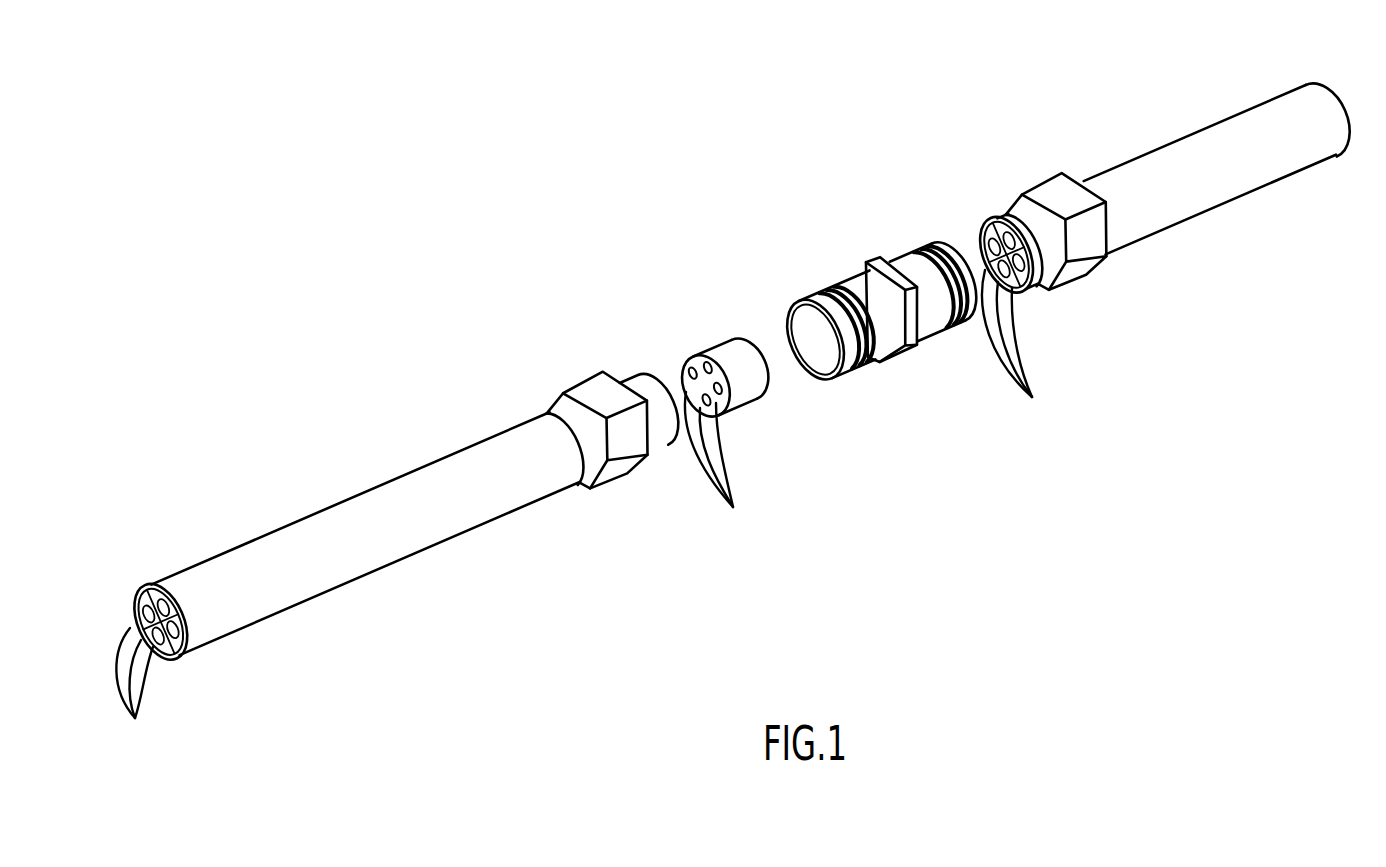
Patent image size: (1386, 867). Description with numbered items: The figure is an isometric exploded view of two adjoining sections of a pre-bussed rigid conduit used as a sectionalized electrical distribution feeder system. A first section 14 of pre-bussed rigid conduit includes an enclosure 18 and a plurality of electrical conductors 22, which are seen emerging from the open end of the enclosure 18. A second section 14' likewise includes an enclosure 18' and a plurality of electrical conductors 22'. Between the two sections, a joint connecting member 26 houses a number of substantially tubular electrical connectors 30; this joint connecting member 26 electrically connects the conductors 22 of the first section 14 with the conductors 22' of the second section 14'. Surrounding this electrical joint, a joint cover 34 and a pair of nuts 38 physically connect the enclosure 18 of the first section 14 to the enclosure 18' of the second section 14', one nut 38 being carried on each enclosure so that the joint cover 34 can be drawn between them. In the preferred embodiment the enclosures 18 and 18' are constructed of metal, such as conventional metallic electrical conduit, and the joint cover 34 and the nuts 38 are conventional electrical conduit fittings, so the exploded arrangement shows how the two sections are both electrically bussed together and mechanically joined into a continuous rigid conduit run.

The first section 14 is at (1165, 217).
The second section 14' is at (347, 556).
The enclosure 18 is at (1205, 188).
The enclosure 18' is at (364, 533).
The electrical conductors 22 is at (1024, 342).
The electrical conductors 22' is at (138, 692).
The joint connecting member 26 is at (728, 348).
The tubular electrical connectors 30 is at (725, 460).
The joint cover 34 is at (858, 292).
The nuts 38 is at (585, 394).